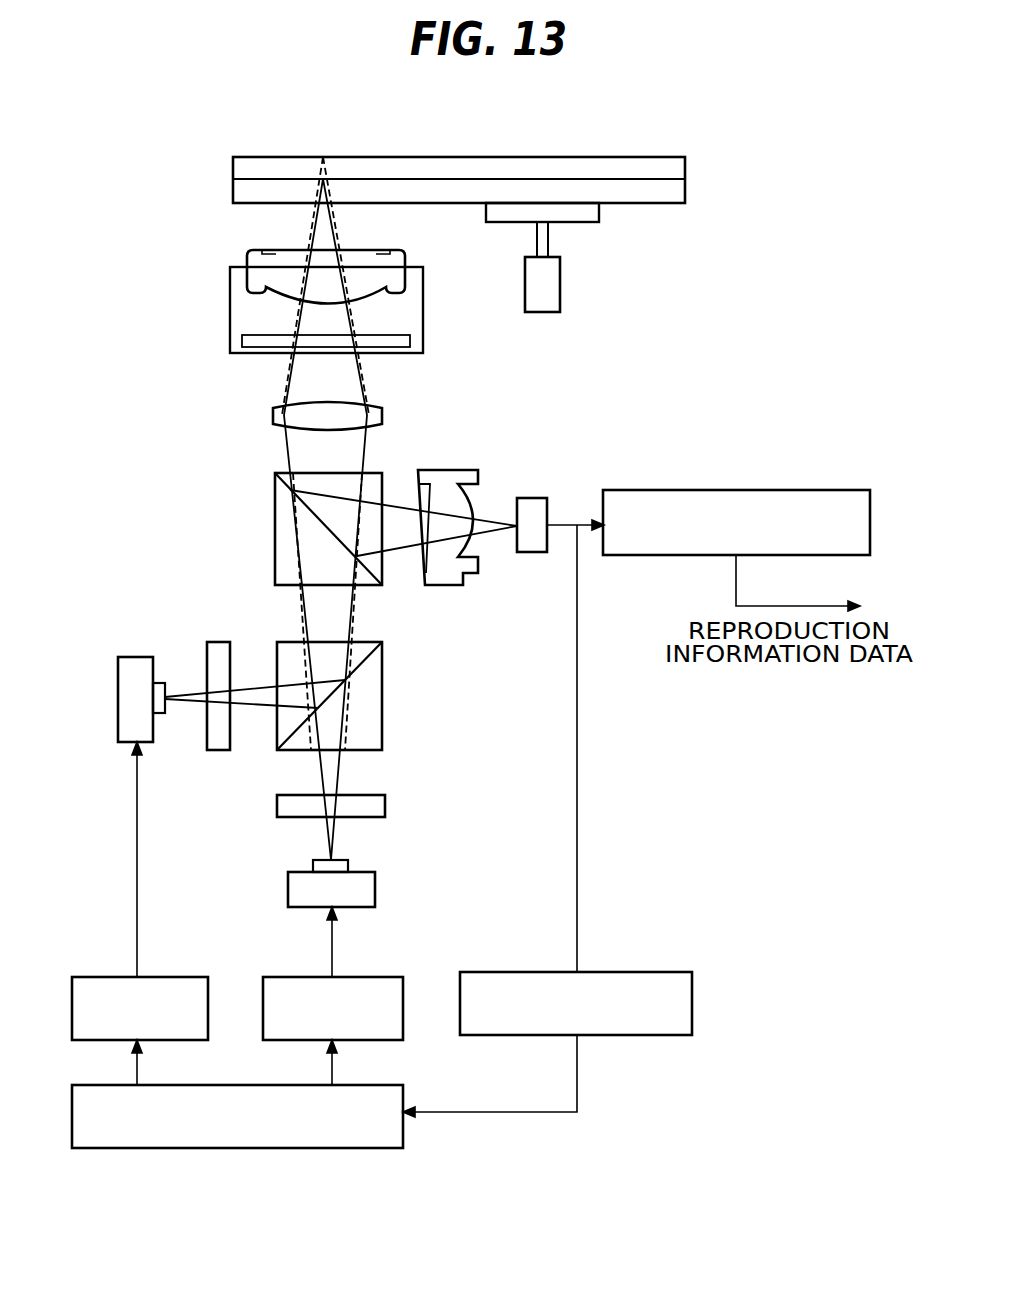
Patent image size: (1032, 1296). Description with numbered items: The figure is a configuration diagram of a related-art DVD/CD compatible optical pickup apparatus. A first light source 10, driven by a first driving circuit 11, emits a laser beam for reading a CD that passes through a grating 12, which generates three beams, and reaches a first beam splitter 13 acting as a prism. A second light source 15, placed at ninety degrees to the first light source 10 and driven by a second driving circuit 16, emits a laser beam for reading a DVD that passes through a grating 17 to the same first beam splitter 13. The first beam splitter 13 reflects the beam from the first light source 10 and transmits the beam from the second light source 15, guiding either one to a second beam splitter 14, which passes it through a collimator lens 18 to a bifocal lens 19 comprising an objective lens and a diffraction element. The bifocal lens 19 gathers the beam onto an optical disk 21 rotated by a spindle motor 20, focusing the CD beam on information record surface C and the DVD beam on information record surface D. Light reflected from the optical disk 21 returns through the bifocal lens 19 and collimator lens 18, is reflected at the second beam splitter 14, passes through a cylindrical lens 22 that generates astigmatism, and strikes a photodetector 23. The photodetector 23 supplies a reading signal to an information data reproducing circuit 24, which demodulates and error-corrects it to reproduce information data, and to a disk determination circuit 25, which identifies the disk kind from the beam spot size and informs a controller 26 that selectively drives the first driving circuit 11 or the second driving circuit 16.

The first light source 10 is at (118, 730).
The first driving circuit 11 is at (200, 977).
The grating 12 is at (213, 642).
The first beam splitter 13 is at (385, 645).
The second beam splitter 14 is at (275, 474).
The second light source 15 is at (376, 877).
The second driving circuit 16 is at (397, 977).
The grating 17 is at (387, 797).
The collimator lens 18 is at (383, 407).
The bifocal lens 19 is at (230, 351).
The spindle motor 20 is at (560, 278).
The optical disk 21 is at (640, 157).
The cylindrical lens 22 is at (455, 470).
The photodetector 23 is at (545, 498).
The information data reproducing circuit 24 is at (780, 490).
The disk determination circuit 25 is at (685, 972).
The controller 26 is at (398, 1085).
The information record surface C is at (222, 160).
The information record surface D is at (222, 190).